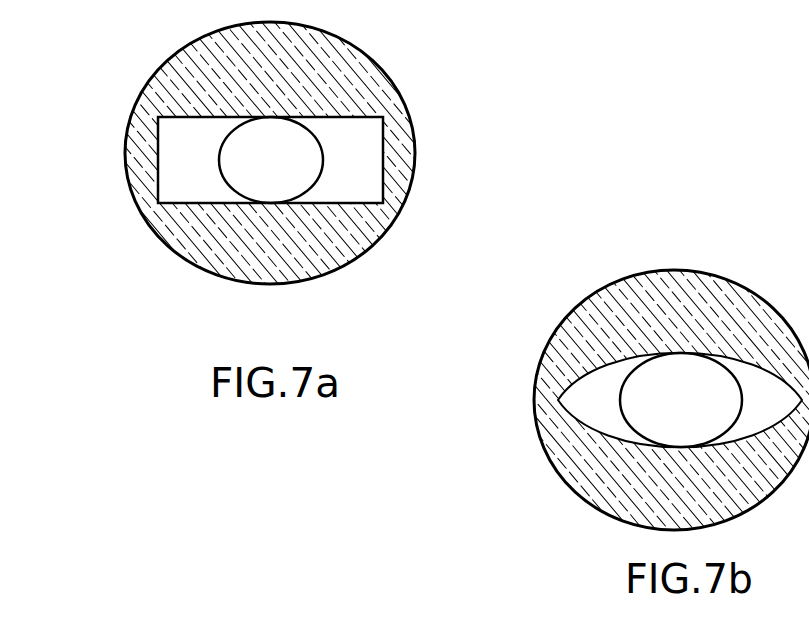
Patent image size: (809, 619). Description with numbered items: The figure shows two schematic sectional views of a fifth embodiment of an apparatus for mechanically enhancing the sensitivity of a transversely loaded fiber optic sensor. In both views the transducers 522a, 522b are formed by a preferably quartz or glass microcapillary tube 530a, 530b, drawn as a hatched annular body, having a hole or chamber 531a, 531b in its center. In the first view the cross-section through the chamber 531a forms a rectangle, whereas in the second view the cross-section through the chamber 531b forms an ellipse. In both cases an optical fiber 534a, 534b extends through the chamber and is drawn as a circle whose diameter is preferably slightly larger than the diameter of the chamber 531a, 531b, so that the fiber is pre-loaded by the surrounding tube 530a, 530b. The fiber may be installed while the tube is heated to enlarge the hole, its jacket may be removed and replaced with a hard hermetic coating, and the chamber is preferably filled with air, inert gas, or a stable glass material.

In FIG. 7A, the transducer 522a is at (137, 67).
In FIG. 7A, the microcapillary tube 530a is at (310, 263).
In FIG. 7A, the chamber 531a is at (367, 115).
In FIG. 7A, the optical fiber 534a is at (227, 183).
In FIG. 7B, the transducer 522b is at (573, 279).
In FIG. 7B, the microcapillary tube 530b is at (602, 487).
In FIG. 7B, the chamber 531b is at (590, 362).
In FIG. 7B, the optical fiber 534b is at (630, 427).